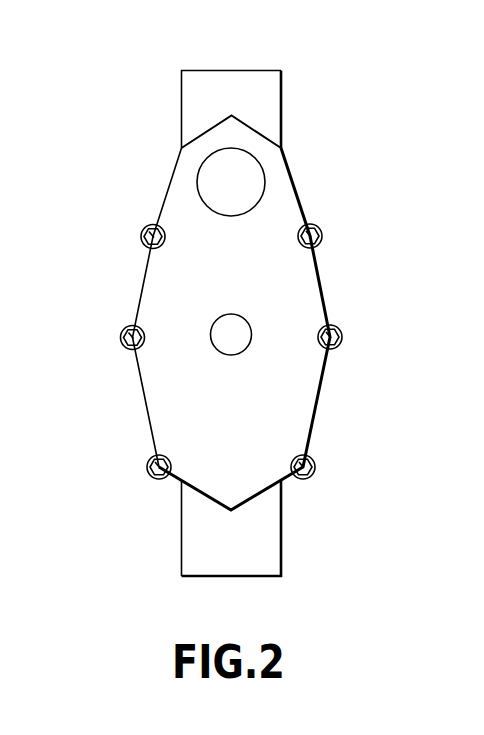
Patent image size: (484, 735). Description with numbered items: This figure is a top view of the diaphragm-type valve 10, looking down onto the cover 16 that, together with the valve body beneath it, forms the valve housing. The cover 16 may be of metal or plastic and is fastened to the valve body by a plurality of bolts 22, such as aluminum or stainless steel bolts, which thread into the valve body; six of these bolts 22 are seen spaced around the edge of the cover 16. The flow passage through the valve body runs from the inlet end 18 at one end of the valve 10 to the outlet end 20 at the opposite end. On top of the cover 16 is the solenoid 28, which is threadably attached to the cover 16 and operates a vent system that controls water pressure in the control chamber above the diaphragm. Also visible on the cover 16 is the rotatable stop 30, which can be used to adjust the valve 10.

The valve 10 is at (103, 155).
The cover 16 is at (315, 288).
The inlet end 18 is at (264, 596).
The outlet end 20 is at (273, 48).
The bolts 22 is at (143, 232).
The solenoid 28 is at (255, 175).
The rotatable stop 30 is at (238, 340).